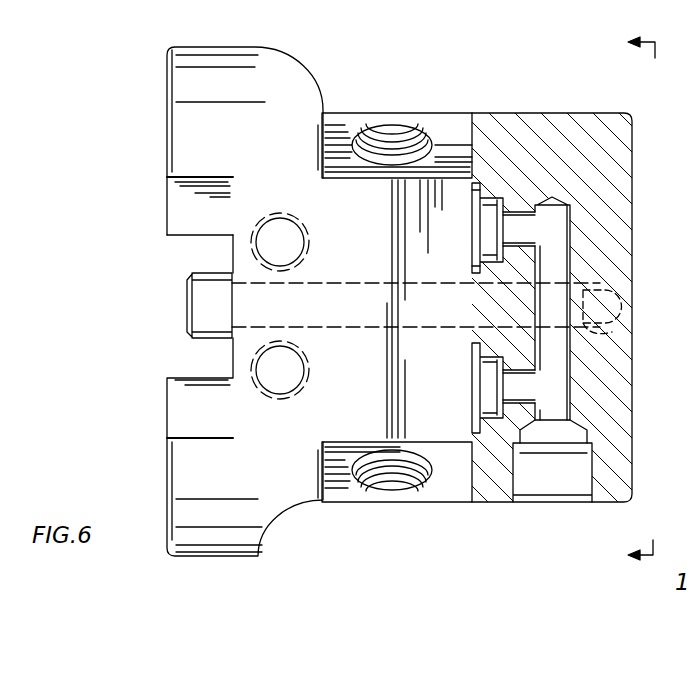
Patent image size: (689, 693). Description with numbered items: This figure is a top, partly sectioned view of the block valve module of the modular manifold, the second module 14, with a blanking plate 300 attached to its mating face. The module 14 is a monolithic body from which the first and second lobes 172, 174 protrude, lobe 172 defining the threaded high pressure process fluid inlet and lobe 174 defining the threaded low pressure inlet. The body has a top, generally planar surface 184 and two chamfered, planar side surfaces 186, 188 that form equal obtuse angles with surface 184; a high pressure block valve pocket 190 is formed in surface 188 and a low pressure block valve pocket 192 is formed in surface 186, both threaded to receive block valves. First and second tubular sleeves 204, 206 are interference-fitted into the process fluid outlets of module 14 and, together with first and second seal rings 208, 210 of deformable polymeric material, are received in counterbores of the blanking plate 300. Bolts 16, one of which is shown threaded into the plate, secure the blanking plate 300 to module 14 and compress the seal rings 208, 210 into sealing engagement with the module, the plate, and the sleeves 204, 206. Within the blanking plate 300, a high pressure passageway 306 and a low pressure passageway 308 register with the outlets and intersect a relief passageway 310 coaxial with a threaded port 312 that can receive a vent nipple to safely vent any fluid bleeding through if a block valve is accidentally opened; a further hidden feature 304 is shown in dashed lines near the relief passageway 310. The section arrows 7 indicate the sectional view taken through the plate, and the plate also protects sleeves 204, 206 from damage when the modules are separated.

The second module 14 is at (148, 134).
The bolts 16 is at (187, 305).
The first lobe 172 is at (180, 78).
The second lobe 174 is at (190, 470).
The top planar surface 184 is at (292, 205).
The chamfered planar side surface 186 is at (450, 478).
The opposed chamfered planar side surface 188 is at (457, 140).
The high pressure block valve pocket 190 is at (383, 142).
The low pressure block valve pocket 192 is at (380, 478).
The first tubular sleeve 204 is at (487, 217).
The second tubular sleeve 206 is at (490, 373).
The first seal ring 208 is at (475, 250).
The second seal ring 210 is at (478, 405).
The blanking plate 300 is at (560, 58).
The pin 304 is at (603, 333).
The high pressure passageway 306 is at (517, 225).
The low pressure passageway 308 is at (527, 392).
The relief passageway 310 is at (565, 244).
The threaded port 312 is at (555, 492).
The section line 7- 7 is at (631, 301).